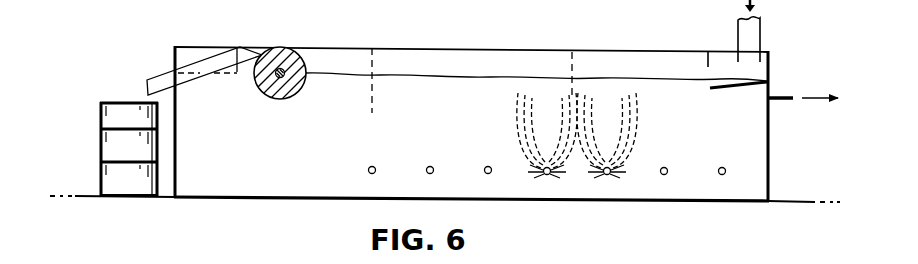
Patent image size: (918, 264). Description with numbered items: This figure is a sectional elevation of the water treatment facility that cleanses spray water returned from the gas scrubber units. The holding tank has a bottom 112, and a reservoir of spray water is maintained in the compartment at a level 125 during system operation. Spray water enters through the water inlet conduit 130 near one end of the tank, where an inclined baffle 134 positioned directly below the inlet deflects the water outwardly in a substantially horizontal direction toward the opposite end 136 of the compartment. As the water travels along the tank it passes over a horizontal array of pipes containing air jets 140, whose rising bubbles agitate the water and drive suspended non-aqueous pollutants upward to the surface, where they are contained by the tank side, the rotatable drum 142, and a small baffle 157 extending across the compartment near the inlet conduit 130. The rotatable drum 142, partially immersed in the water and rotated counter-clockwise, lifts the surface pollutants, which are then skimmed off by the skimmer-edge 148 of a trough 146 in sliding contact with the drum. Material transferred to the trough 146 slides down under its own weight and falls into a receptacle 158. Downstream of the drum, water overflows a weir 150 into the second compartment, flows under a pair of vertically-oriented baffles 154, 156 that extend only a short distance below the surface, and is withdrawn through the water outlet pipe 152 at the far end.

The bottom 112 is at (739, 201).
The level 125 is at (490, 77).
The water inlet conduit 130 is at (762, 41).
The inclined baffle 134 is at (726, 87).
The opposite end 136 is at (178, 152).
The air jets 140 is at (544, 174).
The rotatable drum 142 is at (305, 62).
The trough 146 is at (191, 63).
The skimmer-edge 148 is at (269, 48).
The weir 150 is at (237, 73).
The water outlet pipe 152 is at (776, 96).
The vertically-oriented baffle 154 is at (373, 62).
The vertically-oriented baffle 156 is at (573, 65).
The small baffle 157 is at (706, 60).
The receptacle 158 is at (100, 148).